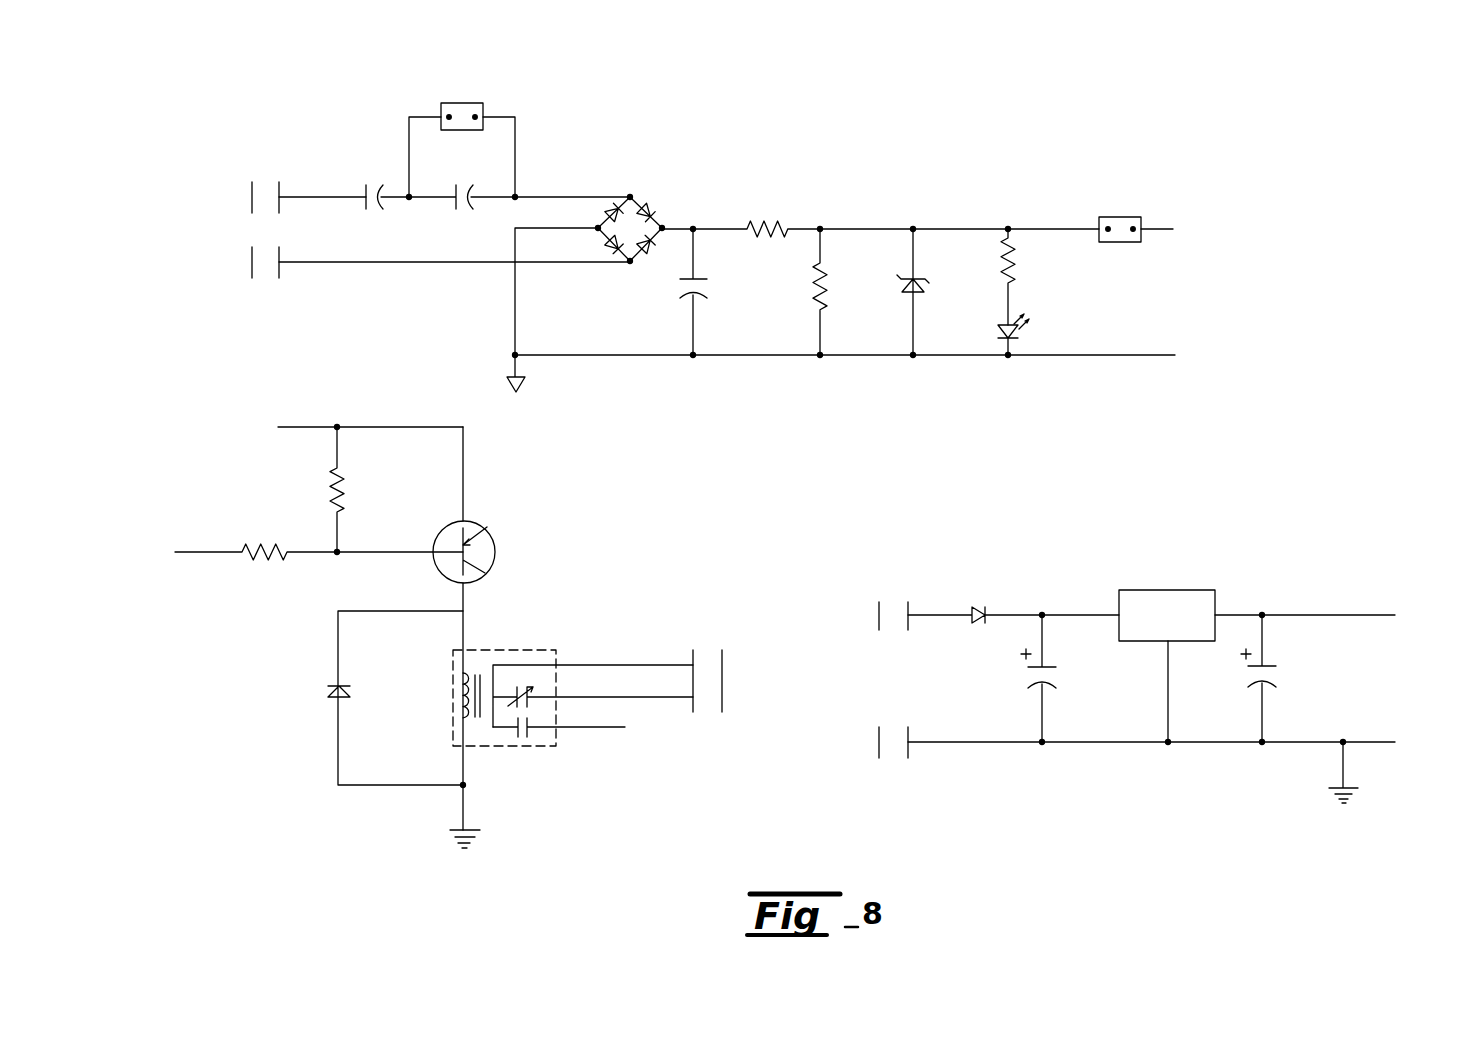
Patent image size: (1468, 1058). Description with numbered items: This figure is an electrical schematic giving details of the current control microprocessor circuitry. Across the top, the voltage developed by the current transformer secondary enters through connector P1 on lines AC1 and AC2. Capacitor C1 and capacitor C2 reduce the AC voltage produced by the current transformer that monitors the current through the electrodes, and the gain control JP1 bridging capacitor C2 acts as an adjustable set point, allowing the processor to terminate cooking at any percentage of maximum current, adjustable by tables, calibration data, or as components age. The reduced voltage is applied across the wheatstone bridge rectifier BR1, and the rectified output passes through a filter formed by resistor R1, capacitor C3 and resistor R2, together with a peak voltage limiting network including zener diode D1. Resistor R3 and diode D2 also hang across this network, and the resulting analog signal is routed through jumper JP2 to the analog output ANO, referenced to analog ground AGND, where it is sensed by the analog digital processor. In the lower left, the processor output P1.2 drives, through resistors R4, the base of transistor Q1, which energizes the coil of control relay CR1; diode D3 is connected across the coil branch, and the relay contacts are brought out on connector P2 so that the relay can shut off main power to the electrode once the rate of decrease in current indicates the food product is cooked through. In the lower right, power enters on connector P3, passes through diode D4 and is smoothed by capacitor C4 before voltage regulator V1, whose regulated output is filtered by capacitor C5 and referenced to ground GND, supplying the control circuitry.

The connector P1 is at (242, 230).
The AC input line AC1 is at (322, 186).
The AC input line AC2 is at (454, 251).
The capacitor C1 is at (386, 184).
The capacitor C2 is at (462, 184).
The gain control JP1 is at (462, 141).
The wheatstone bridge rectifier BR1 is at (597, 283).
The resistor R1 is at (845, 276).
The capacitor C3 is at (710, 292).
The resistor R2 is at (838, 292).
The zener diode D1 is at (929, 292).
The resistor R3 is at (1026, 276).
The light emitting diode D2 is at (1031, 329).
The jumper JP2 is at (1136, 218).
The analog output ANO is at (1201, 229).
The analog ground AGND is at (1208, 355).
The resistor R4 is at (319, 493).
The processor output P1.2 is at (150, 554).
The transistor Q1 is at (476, 637).
The diode D3 is at (397, 699).
The control relay CR1 is at (573, 685).
The connector P2 is at (723, 681).
The connector P3 is at (871, 680).
The diode D4 is at (1013, 632).
The capacitor C4 is at (1151, 679).
The voltage regulator V1 is at (1257, 655).
The capacitor C5 is at (1274, 679).
The ground GND is at (1386, 768).